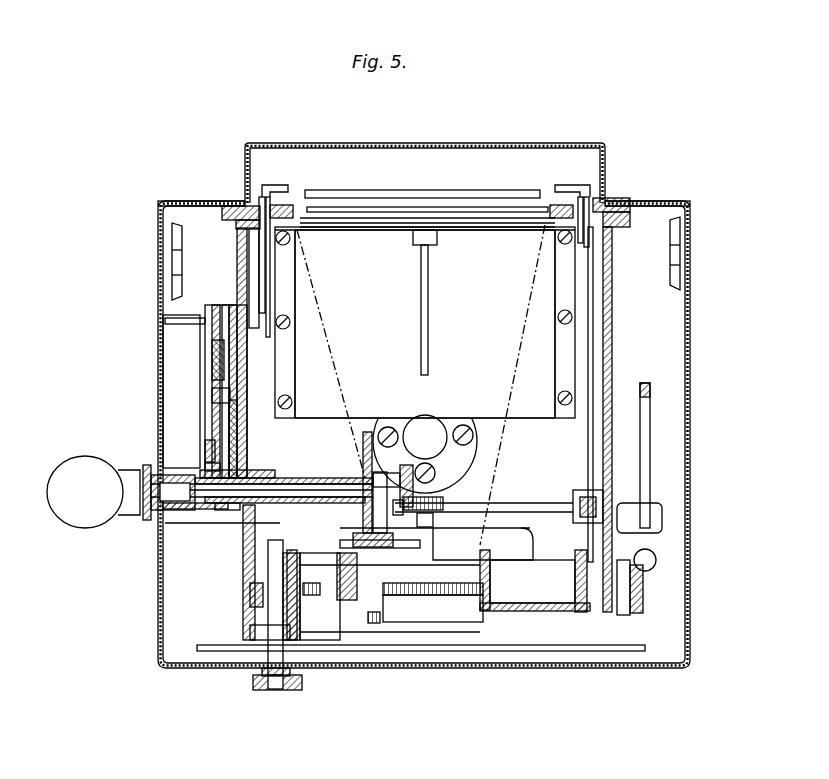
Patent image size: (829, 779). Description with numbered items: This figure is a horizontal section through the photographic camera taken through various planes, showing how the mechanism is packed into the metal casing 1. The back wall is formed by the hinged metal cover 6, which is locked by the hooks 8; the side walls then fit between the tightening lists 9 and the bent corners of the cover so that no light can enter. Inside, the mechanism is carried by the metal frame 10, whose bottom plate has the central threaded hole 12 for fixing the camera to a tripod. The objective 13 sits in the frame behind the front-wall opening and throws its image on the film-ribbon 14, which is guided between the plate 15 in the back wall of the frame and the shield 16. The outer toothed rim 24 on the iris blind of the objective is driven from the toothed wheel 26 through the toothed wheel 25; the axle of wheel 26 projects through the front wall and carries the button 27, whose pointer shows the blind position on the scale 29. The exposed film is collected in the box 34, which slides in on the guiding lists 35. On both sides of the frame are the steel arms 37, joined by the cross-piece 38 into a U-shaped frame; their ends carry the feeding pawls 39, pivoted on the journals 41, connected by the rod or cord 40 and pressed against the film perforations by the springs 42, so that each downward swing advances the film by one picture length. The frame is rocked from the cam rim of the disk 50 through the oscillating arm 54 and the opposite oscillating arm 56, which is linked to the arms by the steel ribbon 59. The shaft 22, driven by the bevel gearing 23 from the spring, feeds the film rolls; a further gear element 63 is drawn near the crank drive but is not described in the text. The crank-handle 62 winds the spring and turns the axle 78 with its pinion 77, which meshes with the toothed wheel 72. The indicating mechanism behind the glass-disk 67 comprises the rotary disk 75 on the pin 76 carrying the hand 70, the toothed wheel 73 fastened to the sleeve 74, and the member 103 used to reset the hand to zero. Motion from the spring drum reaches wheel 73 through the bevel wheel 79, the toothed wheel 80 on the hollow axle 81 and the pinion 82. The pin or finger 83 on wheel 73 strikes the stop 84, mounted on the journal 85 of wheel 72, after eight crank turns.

The casing 1 is at (688, 450).
The cover 6 is at (607, 161).
The hooks 8 is at (182, 250).
The tightening lists 9 is at (176, 211).
The frame 10 is at (248, 312).
The threaded hole 12 is at (425, 454).
The objective 13 is at (383, 596).
The film-ribbon 14 is at (388, 230).
The plate 15 is at (368, 220).
The shield 16 is at (470, 232).
The shaft 22 is at (650, 478).
The bevel gearing 23 is at (648, 583).
The toothed rim 24 is at (503, 588).
The toothed wheel 25 is at (345, 560).
The toothed wheel 26 is at (250, 592).
The button 27 is at (285, 692).
The scale 29 is at (248, 672).
The box 34 is at (425, 324).
The guiding lists 35 is at (290, 360).
The arms 37 is at (258, 268).
The cross-piece 38 is at (278, 190).
The feeding pawls 39 is at (330, 207).
The rod or cord 40 is at (395, 216).
The journals 41 is at (258, 228).
The springs 42 is at (268, 250).
The disk 50 is at (525, 652).
The oscillating arm 54 is at (250, 634).
The oscillating arm 56 is at (510, 505).
The steel ribbon 59 is at (596, 498).
The crank-handle 62 is at (148, 470).
The bevel gears 63 is at (440, 500).
The glass-disk 67 is at (193, 358).
The hand 70 is at (212, 436).
The toothed wheel 72 is at (218, 460).
The toothed wheel 73 is at (236, 455).
The sleeve 74 is at (247, 420).
The rotary disk 75 is at (214, 368).
The pin 76 is at (224, 394).
The pinion 77 is at (220, 508).
The axle 78 is at (277, 488).
The bevel wheel 79 is at (392, 550).
The toothed wheel 80 is at (362, 440).
The hollow axle 81 is at (320, 480).
The pinion 82 is at (232, 512).
The pin or finger 83 is at (228, 320).
The stop 84 is at (238, 340).
The journal 85 is at (214, 345).
The member 103 is at (187, 313).